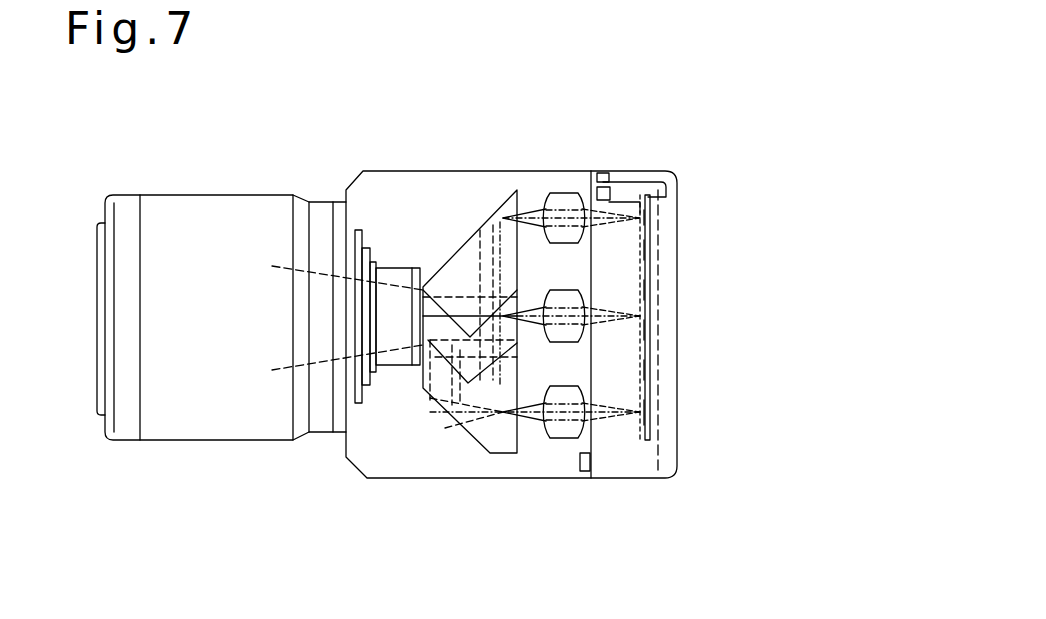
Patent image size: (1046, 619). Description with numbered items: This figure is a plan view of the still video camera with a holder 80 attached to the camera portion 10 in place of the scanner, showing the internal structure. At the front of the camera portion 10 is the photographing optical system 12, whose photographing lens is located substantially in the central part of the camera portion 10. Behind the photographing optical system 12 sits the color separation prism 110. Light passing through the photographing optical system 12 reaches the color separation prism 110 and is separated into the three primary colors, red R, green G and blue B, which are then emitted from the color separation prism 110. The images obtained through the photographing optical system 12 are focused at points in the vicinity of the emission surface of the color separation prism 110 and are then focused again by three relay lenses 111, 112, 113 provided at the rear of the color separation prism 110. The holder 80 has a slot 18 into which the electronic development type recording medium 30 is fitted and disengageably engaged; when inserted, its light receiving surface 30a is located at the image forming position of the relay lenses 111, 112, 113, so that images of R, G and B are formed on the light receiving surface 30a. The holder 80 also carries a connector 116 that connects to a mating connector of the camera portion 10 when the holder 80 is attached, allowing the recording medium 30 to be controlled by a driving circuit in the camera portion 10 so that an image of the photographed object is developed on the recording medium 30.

The camera portion 10 is at (421, 479).
The photographing optical system 12 is at (217, 405).
The slot 18 is at (662, 407).
The electronic development type recording medium 30 is at (657, 248).
The light receiving surface 30a is at (657, 297).
The holder 80 is at (622, 479).
The color separation prism 110 is at (457, 250).
The relay lens 111 is at (568, 440).
The relay lens 112 is at (657, 346).
The relay lens 113 is at (569, 192).
The connector 116 is at (610, 198).
The red R is at (528, 205).
The green G is at (538, 343).
The blue B is at (530, 445).